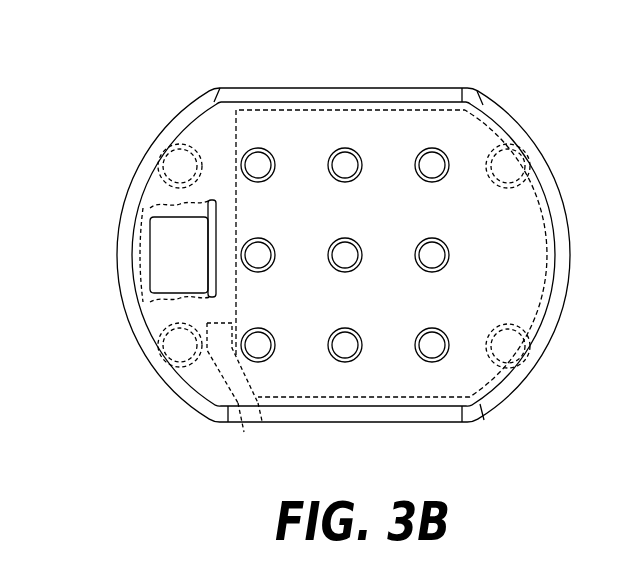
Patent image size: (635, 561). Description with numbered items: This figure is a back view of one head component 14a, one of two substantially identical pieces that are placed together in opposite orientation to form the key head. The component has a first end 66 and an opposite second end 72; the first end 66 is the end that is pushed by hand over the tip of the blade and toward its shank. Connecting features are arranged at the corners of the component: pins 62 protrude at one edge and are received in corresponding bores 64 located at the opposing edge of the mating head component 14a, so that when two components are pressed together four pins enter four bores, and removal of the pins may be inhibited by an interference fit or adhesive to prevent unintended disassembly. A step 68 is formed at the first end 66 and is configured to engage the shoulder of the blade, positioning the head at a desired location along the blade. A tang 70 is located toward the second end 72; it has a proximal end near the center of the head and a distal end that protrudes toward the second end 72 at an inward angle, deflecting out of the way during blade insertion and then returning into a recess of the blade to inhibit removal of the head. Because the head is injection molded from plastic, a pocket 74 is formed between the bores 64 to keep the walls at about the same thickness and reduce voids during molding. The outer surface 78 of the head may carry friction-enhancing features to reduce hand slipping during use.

The head component 14a is at (515, 85).
The first end 66 is at (183, 85).
The step 68 is at (231, 114).
The pin 62 is at (518, 164).
The bore 64 is at (172, 160).
The pocket 74 is at (152, 258).
The outer surface 78 is at (517, 256).
The second end 72 is at (182, 401).
The tang 70 is at (243, 423).